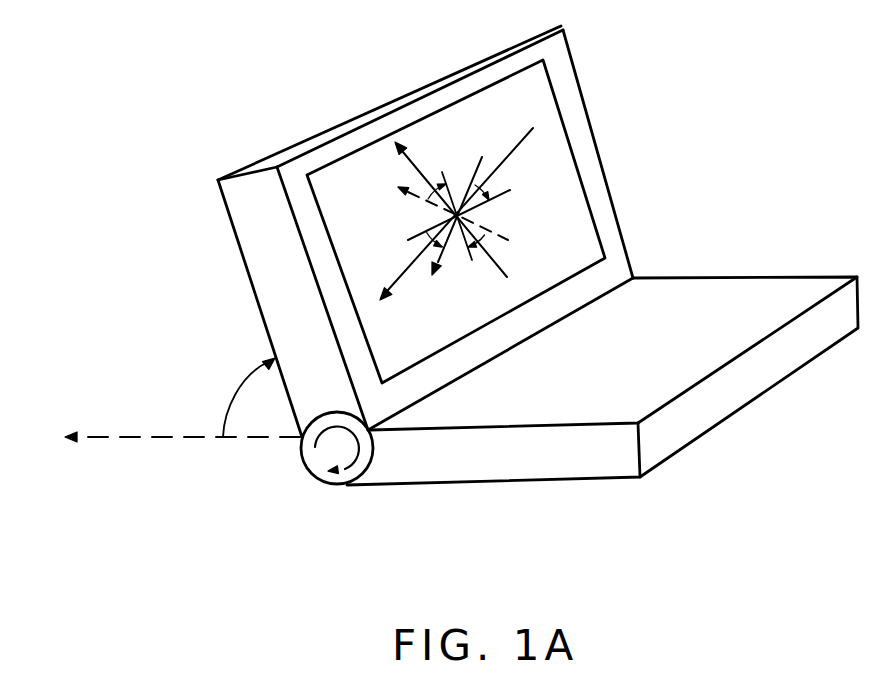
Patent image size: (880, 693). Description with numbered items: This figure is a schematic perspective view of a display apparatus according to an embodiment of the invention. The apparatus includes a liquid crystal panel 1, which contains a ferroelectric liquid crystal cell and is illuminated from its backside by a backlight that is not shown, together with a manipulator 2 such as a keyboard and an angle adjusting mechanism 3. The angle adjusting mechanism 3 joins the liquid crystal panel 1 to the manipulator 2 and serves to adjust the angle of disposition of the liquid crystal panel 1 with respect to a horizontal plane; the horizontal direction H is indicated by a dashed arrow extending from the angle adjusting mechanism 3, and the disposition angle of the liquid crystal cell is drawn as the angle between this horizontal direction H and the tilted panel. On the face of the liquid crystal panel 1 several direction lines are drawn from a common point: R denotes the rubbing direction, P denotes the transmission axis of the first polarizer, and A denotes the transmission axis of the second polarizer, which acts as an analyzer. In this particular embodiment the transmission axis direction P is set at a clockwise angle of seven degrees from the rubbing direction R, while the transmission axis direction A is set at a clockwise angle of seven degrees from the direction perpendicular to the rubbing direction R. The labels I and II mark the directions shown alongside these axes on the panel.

The liquid crystal panel 1 is at (563, 200).
The manipulator 2 is at (750, 290).
The angle adjusting mechanism 3 is at (371, 458).
The transmission axis of second polarizer A is at (507, 275).
The transmission axis of first polarizer P is at (533, 128).
The rubbing direction R is at (482, 157).
The horizontal direction H is at (166, 440).
The viewing direction I is at (464, 233).
The viewing direction II is at (467, 205).